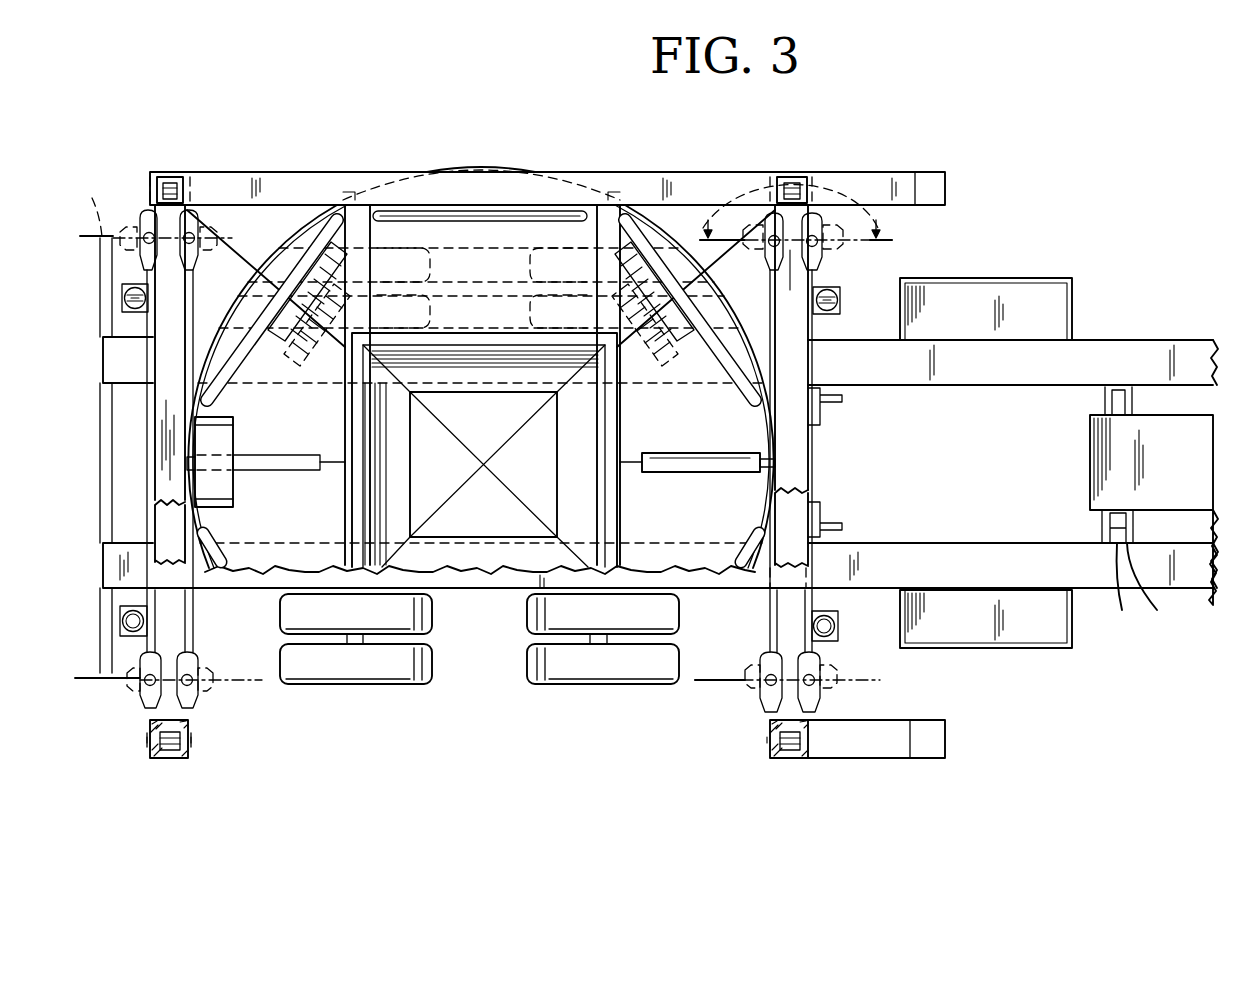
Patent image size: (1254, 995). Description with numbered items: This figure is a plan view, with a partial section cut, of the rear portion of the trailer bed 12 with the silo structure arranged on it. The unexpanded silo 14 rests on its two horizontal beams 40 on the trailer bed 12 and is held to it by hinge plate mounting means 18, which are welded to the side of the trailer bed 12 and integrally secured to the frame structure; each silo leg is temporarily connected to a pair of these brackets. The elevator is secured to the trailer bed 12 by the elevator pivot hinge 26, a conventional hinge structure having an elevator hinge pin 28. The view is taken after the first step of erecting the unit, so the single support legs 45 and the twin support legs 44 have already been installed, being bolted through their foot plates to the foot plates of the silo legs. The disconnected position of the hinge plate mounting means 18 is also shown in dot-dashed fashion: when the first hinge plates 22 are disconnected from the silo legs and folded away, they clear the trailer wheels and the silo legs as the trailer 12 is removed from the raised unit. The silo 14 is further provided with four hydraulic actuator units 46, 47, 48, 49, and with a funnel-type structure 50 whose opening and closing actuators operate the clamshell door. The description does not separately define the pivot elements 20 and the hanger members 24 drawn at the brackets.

The trailer bed 12 is at (1213, 590).
The silo 14 is at (158, 447).
The hinge plate mounting means 18 is at (150, 191).
The clevis 20 is at (147, 683).
The first hinge plates 22 is at (247, 680).
The hanger rod 24 is at (152, 273).
The elevator pivot hinge 26 is at (1158, 593).
The elevator hinge pin 28 is at (1131, 593).
The horizontal beams 40 is at (157, 522).
The twin support legs 44 is at (868, 752).
The single support legs 45 is at (180, 758).
The hydraulic actuator unit 46 is at (122, 622).
The hydraulic actuator unit 47 is at (124, 300).
The hydraulic actuator unit 48 is at (839, 628).
The hydraulic actuator unit 49 is at (840, 293).
The funnel-type structure 50 is at (672, 227).